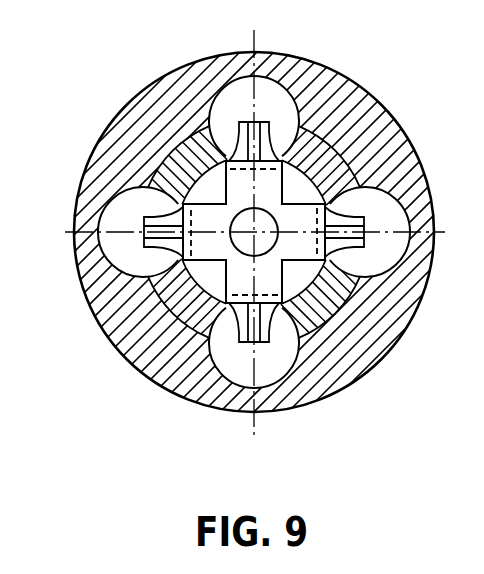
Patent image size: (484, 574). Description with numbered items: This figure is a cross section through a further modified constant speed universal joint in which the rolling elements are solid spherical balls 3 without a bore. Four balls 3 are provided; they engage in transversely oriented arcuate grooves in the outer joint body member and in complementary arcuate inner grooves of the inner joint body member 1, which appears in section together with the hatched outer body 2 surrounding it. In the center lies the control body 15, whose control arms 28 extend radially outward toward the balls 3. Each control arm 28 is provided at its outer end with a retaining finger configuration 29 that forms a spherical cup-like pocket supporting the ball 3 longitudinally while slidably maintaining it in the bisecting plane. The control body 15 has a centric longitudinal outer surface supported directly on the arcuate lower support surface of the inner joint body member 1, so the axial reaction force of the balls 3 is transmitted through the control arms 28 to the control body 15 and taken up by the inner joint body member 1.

The inner joint body member 1 is at (177, 393).
The housing wall 2 is at (132, 147).
The balls 3 is at (233, 117).
The control body 15 is at (219, 228).
The control arms 28 is at (262, 273).
The retaining finger configuration 29 is at (146, 224).